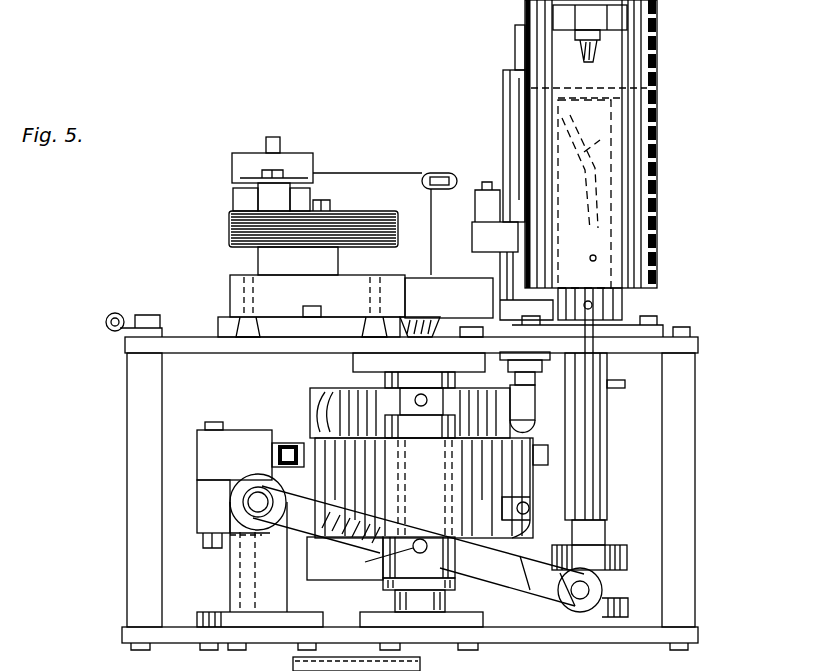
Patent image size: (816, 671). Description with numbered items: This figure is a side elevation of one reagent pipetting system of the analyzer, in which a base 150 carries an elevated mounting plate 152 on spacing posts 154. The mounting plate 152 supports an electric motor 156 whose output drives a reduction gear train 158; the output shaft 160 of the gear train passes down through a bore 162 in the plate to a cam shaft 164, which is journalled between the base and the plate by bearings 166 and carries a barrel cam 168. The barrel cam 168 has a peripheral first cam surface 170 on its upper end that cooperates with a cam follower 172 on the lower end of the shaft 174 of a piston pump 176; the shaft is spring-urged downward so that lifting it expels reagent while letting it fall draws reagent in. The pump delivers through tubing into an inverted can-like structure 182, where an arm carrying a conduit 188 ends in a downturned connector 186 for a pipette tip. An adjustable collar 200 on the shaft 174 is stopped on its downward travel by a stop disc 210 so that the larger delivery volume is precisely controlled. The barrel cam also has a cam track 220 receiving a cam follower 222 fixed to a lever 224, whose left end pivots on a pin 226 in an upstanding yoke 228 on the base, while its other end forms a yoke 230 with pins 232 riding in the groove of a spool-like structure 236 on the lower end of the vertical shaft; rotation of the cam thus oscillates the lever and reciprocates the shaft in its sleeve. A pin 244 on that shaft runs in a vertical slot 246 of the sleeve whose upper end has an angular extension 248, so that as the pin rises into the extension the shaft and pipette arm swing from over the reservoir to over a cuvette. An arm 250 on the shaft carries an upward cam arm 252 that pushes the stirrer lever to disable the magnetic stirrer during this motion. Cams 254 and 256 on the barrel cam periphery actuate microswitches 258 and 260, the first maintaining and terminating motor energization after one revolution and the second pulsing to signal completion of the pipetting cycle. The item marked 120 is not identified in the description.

The cylinder body 120 is at (317, 497).
The base 150 is at (698, 636).
The mounting plate 152 is at (700, 346).
The spacing posts 154 is at (135, 490).
The electric motor 156 is at (353, 222).
The reduction gear train 158 is at (240, 297).
The output shaft 160 is at (547, 307).
The bore 162 is at (403, 321).
The cam shaft 164 is at (390, 396).
The bearings 166 is at (395, 381).
The barrel cam 168 is at (310, 440).
The first cam surface 170 is at (325, 398).
The cam follower 172 is at (512, 412).
The shaft 174 is at (522, 300).
The piston pump 176 is at (505, 99).
The can-like structure 182 is at (657, 212).
The connector 186 is at (600, 58).
The conduit 188 is at (630, 22).
The adjustable collar 200 is at (496, 292).
The stop disc 210 is at (622, 388).
The cam track 220 is at (418, 524).
The cam follower 222 is at (377, 562).
The lever 224 is at (320, 520).
The pin 226 is at (258, 494).
The upstanding yoke 228 is at (253, 562).
The yoke 230 is at (555, 595).
The pins 232 is at (583, 592).
The spool-like structure 236 is at (630, 583).
The pin 244 is at (615, 305).
The slot 246 is at (600, 257).
The angular extension 248 is at (630, 147).
The arm 250 is at (543, 552).
The cam arm 252 is at (590, 447).
The cam 254 is at (513, 505).
The cam 256 is at (505, 460).
The microswitch 258 is at (203, 507).
The microswitch 260 is at (203, 434).